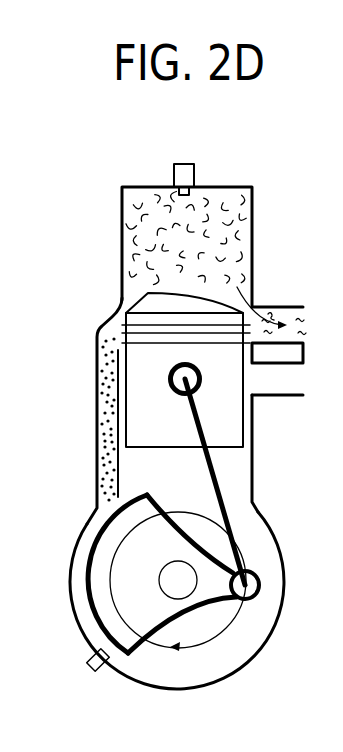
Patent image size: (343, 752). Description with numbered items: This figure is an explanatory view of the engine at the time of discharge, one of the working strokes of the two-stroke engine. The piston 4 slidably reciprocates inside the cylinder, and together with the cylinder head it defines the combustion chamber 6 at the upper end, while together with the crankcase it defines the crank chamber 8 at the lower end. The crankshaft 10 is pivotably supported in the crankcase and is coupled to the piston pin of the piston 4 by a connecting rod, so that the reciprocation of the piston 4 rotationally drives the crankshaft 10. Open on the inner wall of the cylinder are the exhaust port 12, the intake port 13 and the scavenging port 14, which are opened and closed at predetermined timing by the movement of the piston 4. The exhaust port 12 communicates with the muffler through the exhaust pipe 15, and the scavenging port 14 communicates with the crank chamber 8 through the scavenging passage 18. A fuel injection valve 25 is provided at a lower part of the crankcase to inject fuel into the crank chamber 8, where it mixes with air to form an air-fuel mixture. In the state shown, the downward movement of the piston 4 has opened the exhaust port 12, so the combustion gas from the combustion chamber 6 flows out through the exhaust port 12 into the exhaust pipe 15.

The piston 4 is at (229, 418).
The combustion chamber 6 is at (220, 220).
The crank chamber 8 is at (225, 667).
The crankshaft 10 is at (180, 583).
The exhaust port 12 is at (262, 306).
The intake port 13 is at (252, 378).
The scavenging port 14 is at (112, 333).
The exhaust pipe 15 is at (283, 303).
The scavenging passage 18 is at (104, 412).
The fuel injection valve 25 is at (93, 679).